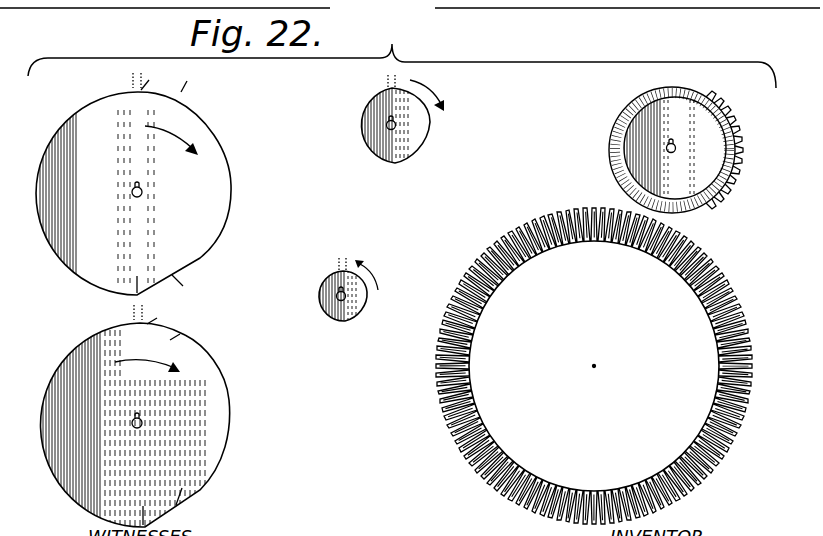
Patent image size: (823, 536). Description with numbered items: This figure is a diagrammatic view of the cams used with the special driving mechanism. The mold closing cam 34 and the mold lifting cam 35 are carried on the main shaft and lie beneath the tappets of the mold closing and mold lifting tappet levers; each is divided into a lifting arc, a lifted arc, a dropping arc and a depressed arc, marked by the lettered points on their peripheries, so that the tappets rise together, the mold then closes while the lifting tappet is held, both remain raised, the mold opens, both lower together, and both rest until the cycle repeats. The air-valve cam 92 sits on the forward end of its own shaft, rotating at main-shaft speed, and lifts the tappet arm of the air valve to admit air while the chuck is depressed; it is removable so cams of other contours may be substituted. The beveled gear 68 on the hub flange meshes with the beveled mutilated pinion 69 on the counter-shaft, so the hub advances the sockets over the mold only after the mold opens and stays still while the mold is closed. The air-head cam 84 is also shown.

The mold closing cam 34 is at (213, 178).
The mold lifting cam 35 is at (198, 376).
The air-head cam 84 is at (431, 128).
The cam 92 is at (357, 315).
The beveled gear 68 is at (661, 263).
The beveled mutilated pinion 69 is at (620, 136).